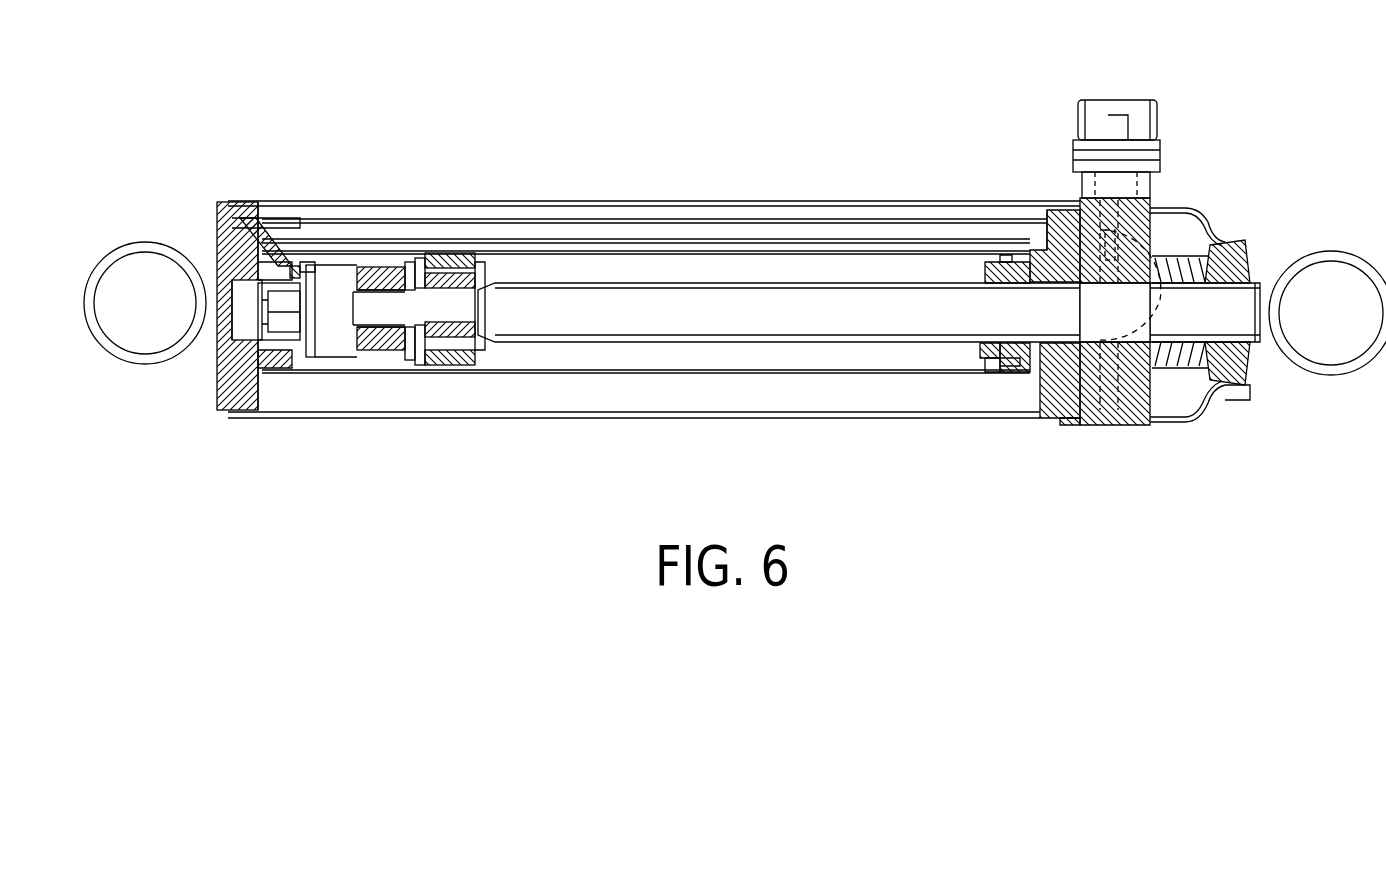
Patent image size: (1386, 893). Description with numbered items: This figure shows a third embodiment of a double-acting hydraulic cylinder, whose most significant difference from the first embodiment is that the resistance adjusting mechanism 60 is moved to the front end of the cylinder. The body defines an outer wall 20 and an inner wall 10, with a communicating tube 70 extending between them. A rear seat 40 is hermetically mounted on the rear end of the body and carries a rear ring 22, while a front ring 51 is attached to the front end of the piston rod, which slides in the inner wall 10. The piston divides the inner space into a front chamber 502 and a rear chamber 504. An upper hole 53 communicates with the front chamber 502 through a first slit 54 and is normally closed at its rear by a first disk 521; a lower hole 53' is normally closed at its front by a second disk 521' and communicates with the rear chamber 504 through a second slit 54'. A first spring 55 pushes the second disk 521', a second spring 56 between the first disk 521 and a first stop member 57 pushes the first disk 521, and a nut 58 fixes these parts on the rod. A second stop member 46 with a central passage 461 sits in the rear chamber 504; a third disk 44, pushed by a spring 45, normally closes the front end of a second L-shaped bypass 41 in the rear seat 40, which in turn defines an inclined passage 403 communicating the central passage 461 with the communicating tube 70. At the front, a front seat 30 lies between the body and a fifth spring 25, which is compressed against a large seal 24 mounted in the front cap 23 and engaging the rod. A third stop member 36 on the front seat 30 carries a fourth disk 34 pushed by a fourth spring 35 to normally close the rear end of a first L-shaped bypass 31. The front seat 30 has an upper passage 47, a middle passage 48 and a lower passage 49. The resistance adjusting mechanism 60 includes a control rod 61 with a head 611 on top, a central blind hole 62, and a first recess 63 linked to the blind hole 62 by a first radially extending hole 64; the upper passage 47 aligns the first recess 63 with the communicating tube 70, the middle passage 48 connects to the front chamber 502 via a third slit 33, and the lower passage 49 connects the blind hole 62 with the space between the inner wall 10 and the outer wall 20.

The inner wall 10 is at (885, 252).
The outer wall 20 is at (790, 220).
The rear ring 22 is at (152, 363).
The front cap 23 is at (1250, 400).
The large seal 24 is at (1238, 242).
The fifth spring 25 is at (1202, 220).
The front seat 30 is at (1140, 427).
The first L-shaped bypass 31 is at (1020, 378).
The third slit 33 is at (985, 262).
The fourth disk 34 is at (1000, 373).
The fourth spring 35 is at (1008, 370).
The third stop member 36 is at (977, 346).
The rear seat 40 is at (231, 407).
The second L-shaped bypass 41 is at (262, 396).
The third disk 44 is at (295, 263).
The spring 45 is at (307, 262).
The second stop member 46 is at (316, 357).
The upper passage 47 is at (1083, 228).
The middle passage 48 is at (1053, 210).
The lower passage 49 is at (1077, 425).
The front ring 51 is at (1335, 251).
The upper hole 53 is at (450, 187).
The lower hole 53' is at (467, 378).
The first slit 54 is at (466, 214).
The second slit 54' is at (445, 400).
The first spring 55 is at (498, 272).
The second spring 56 is at (398, 350).
The first stop member 57 is at (408, 260).
The nut 58 is at (357, 330).
The resistance adjusting mechanism 60 is at (1134, 79).
The control rod 61 is at (1114, 140).
The blind hole 62 is at (1110, 405).
The first recess 63 is at (1167, 230).
The first radially extending hole 64 is at (1147, 208).
The communicating tube 70 is at (848, 241).
The inclined passage 403 is at (221, 250).
The central passage 461 is at (316, 335).
The front chamber 502 is at (615, 277).
The rear chamber 504 is at (342, 365).
The first disk 521 is at (417, 220).
The second disk 521' is at (508, 365).
The head 611 is at (1158, 100).